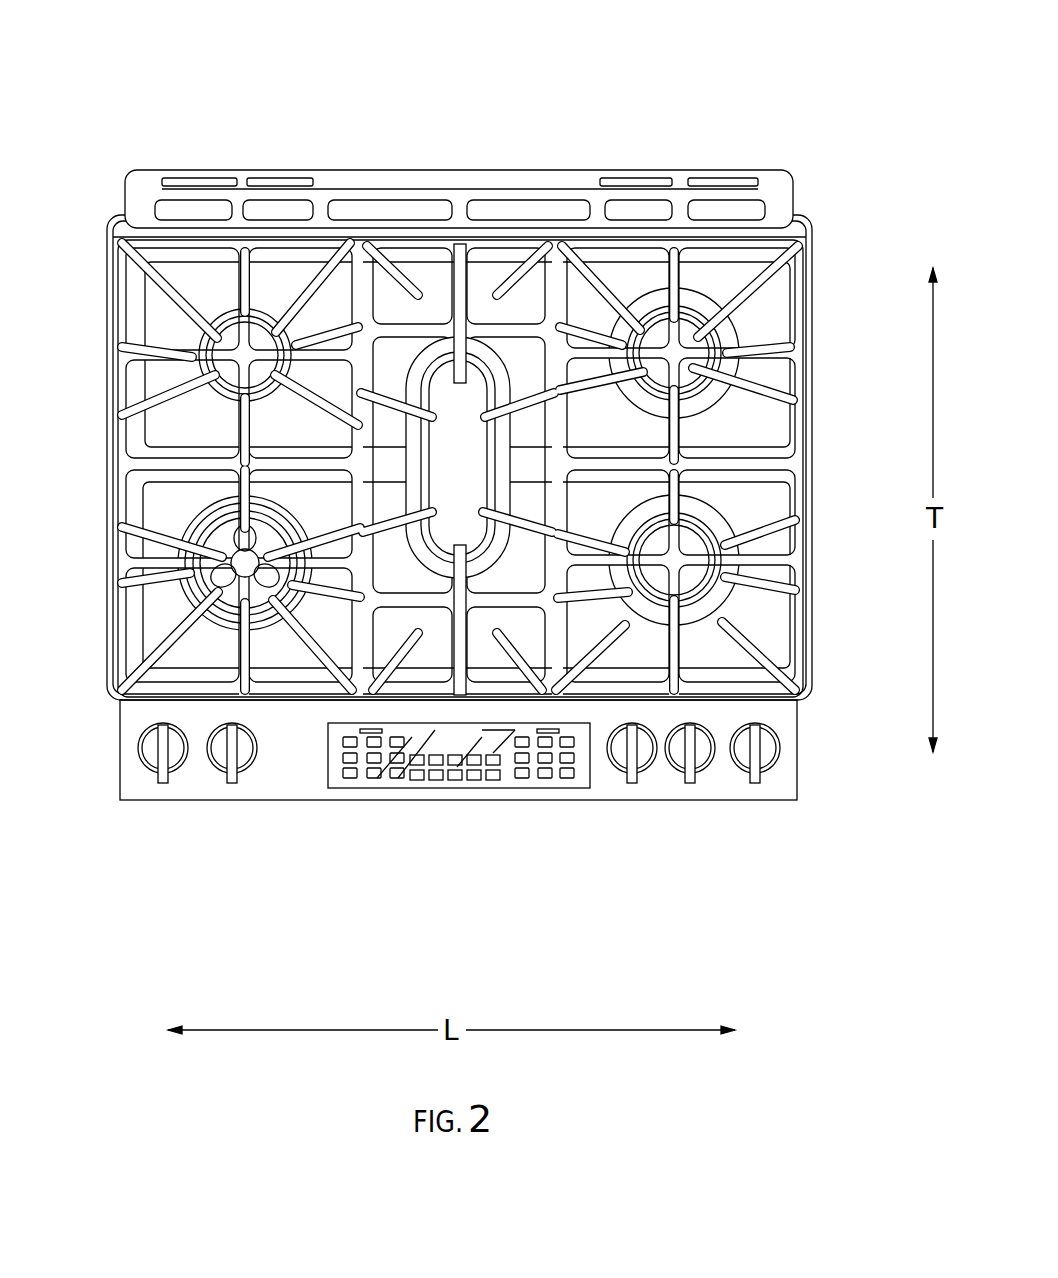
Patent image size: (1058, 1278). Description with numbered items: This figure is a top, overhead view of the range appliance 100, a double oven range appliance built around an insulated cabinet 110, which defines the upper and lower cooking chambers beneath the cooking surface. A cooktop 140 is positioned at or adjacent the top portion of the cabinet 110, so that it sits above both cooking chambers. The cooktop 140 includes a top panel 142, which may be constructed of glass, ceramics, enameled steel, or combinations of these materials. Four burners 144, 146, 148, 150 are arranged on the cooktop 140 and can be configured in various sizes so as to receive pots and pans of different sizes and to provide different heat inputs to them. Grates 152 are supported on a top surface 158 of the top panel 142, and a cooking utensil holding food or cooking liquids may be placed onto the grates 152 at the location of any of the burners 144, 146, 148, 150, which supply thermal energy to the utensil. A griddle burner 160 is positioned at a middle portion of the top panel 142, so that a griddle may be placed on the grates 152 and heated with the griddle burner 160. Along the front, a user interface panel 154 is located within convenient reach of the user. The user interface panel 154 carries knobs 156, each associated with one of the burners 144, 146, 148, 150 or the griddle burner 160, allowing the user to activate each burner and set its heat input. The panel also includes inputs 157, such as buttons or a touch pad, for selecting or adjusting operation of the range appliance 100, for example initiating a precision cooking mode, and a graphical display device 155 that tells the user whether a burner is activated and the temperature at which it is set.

The range appliance 100 is at (452, 470).
The insulated cabinet 110 is at (522, 185).
The cooktop 140 is at (812, 208).
The top panel 142 is at (785, 617).
The burner 144 is at (227, 360).
The burner 146 is at (227, 530).
The burner 148 is at (680, 347).
The burner 150 is at (705, 520).
The grates 152 is at (452, 376).
The user interface panel 154 is at (435, 827).
The graphical display device 155 is at (428, 780).
The knobs 156 is at (208, 768).
The inputs 157 is at (405, 740).
The top surface 158 is at (143, 617).
The griddle burner 160 is at (468, 398).